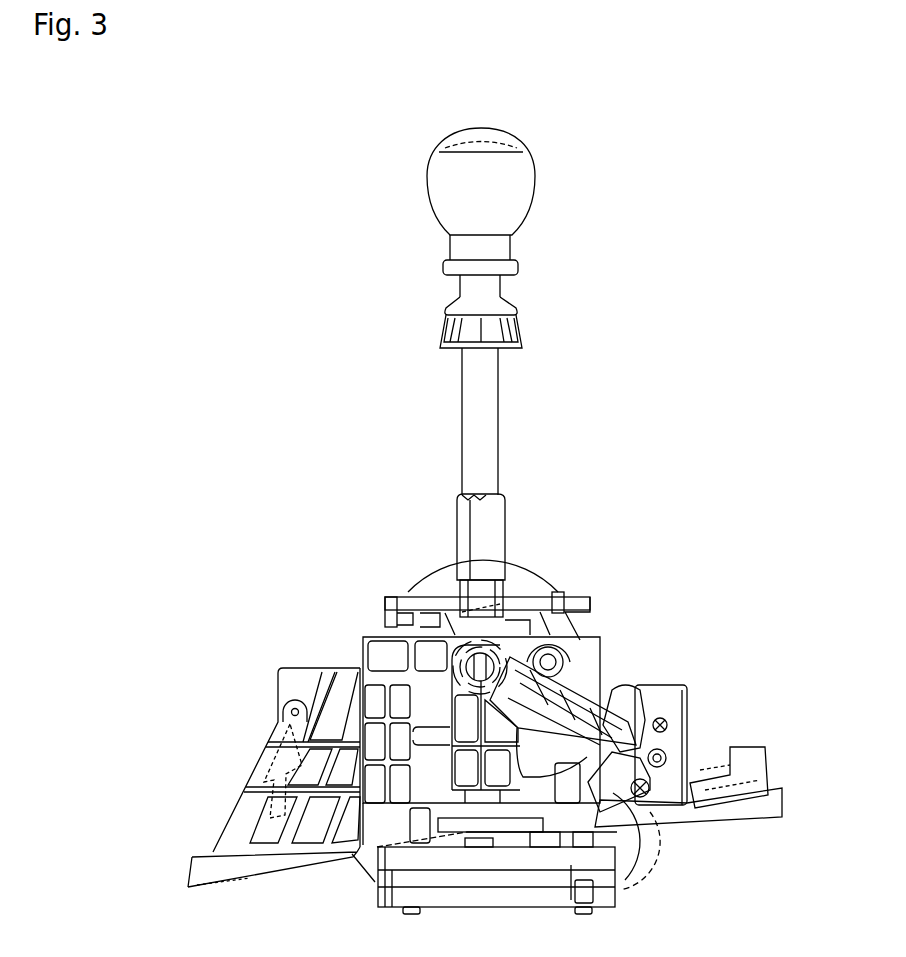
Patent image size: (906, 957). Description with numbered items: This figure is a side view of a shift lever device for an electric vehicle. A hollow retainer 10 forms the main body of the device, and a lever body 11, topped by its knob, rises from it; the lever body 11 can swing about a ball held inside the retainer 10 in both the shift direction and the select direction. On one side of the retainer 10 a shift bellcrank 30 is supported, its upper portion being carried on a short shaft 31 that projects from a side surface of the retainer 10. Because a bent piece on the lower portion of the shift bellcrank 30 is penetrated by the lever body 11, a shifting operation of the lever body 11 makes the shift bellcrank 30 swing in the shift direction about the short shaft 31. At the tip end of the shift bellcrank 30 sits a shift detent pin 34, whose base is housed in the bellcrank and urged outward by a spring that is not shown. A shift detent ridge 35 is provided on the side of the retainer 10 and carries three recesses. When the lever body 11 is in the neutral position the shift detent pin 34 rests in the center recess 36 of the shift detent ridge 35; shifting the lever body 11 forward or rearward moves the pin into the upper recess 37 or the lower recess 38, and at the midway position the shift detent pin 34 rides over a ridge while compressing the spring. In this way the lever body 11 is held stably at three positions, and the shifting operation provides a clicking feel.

The retainer 10 is at (362, 668).
The lever body 11 is at (488, 405).
The shift bellcrank 30 is at (522, 680).
The short shaft 31 is at (468, 658).
The shift detent pin 34 is at (607, 680).
The shift detent ridge 35 is at (676, 693).
The center recess 36 is at (633, 738).
The upper recess 37 is at (632, 682).
The lower recess 38 is at (640, 862).